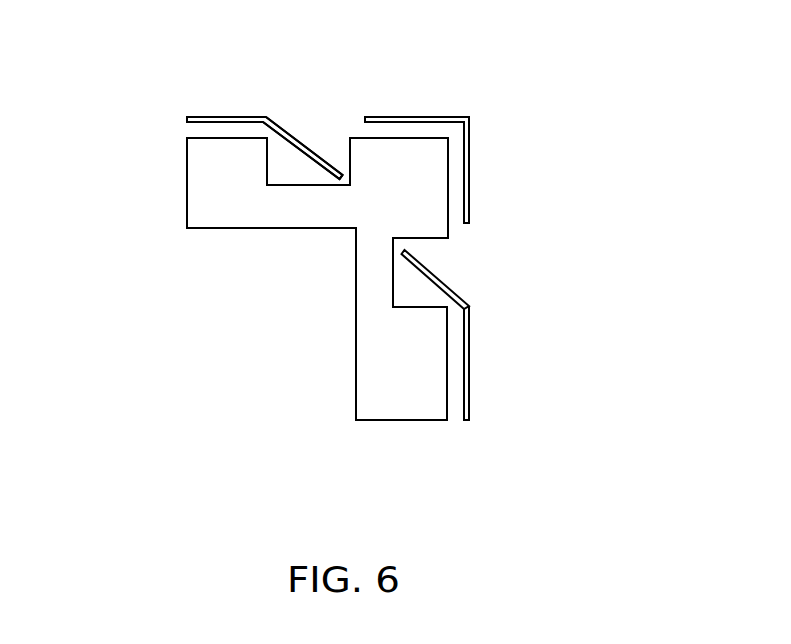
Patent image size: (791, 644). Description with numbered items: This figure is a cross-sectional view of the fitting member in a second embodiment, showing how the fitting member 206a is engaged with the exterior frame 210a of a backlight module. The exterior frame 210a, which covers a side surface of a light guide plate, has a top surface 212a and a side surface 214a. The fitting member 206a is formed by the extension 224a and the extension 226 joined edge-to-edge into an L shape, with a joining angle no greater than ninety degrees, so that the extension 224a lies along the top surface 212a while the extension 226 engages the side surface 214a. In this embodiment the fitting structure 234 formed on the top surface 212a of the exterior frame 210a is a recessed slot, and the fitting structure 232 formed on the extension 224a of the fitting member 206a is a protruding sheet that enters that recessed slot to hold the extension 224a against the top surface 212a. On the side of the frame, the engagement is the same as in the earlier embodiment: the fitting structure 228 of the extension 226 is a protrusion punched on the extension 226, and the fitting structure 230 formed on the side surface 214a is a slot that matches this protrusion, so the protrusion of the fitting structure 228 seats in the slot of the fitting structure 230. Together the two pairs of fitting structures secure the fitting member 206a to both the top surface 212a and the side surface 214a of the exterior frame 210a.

The exterior frame 210a is at (255, 309).
The top surface 212a is at (200, 189).
The side surface 214a is at (413, 410).
The extension 224a is at (223, 117).
The fitting structure 232 is at (288, 128).
The fitting structure 234 is at (323, 127).
The fitting member 206a is at (490, 125).
The fitting structure 228 is at (458, 295).
The extension 226 is at (480, 375).
The fitting structure 230 is at (445, 258).